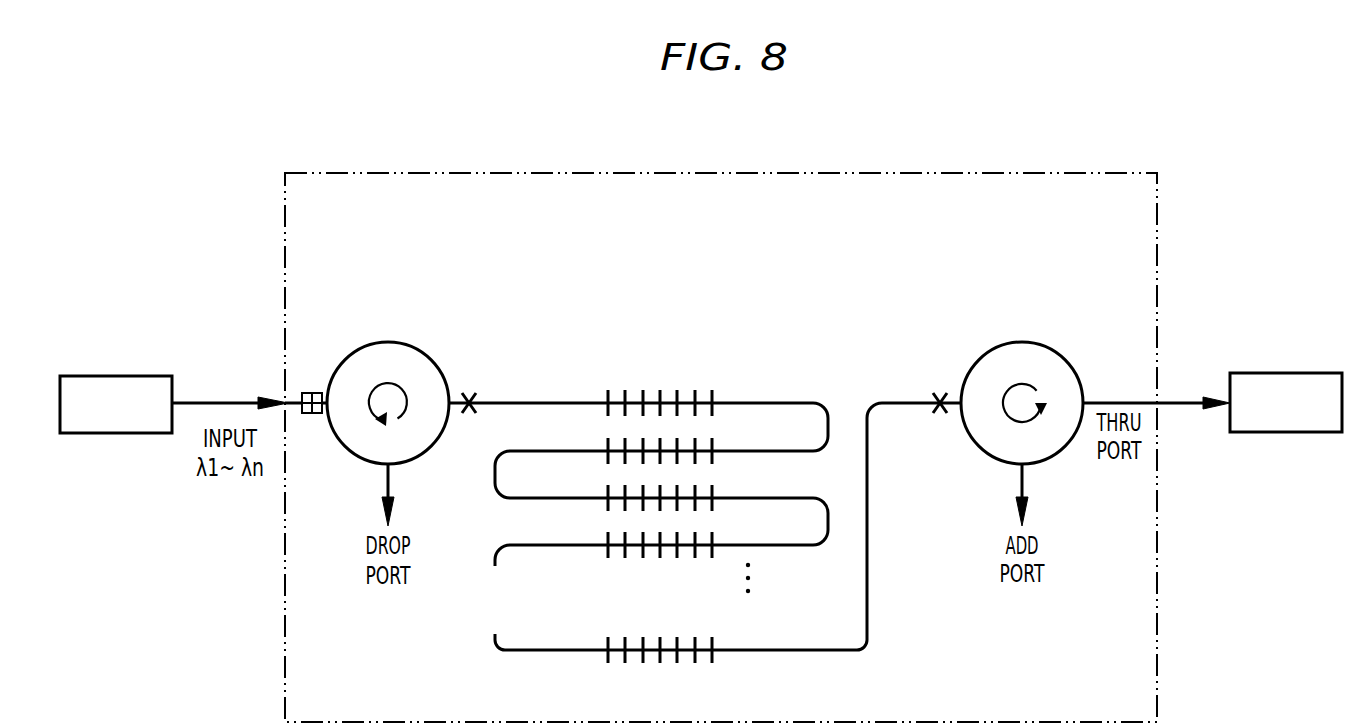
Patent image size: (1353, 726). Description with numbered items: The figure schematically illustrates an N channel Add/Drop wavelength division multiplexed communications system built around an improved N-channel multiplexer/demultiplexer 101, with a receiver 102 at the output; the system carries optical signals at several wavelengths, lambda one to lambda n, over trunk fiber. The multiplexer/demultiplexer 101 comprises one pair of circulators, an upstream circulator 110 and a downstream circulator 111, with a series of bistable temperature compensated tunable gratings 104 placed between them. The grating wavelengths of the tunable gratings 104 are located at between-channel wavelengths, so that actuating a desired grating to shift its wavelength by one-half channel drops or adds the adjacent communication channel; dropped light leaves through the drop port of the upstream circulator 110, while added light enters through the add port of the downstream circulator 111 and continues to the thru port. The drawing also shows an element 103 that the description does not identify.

The N-channel multiplexer/demultiplexer 101 is at (112, 376).
The receiver 102 is at (1158, 243).
The output / thru port receiver 103 is at (1281, 373).
The temperature compensated tunable gratings 104 is at (608, 350).
The upstream circulator 110 is at (383, 342).
The downstream circulator 111 is at (1017, 342).